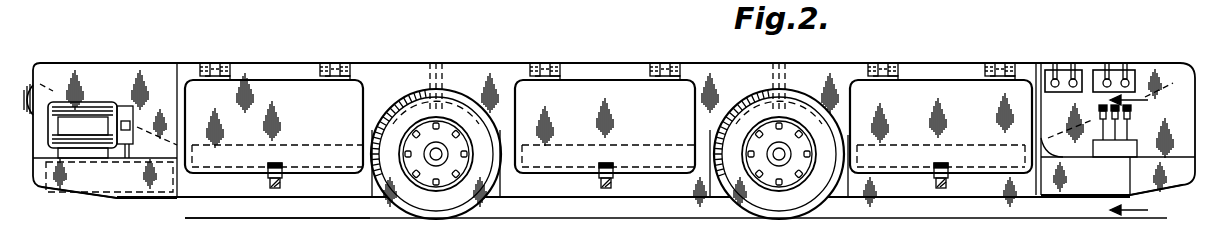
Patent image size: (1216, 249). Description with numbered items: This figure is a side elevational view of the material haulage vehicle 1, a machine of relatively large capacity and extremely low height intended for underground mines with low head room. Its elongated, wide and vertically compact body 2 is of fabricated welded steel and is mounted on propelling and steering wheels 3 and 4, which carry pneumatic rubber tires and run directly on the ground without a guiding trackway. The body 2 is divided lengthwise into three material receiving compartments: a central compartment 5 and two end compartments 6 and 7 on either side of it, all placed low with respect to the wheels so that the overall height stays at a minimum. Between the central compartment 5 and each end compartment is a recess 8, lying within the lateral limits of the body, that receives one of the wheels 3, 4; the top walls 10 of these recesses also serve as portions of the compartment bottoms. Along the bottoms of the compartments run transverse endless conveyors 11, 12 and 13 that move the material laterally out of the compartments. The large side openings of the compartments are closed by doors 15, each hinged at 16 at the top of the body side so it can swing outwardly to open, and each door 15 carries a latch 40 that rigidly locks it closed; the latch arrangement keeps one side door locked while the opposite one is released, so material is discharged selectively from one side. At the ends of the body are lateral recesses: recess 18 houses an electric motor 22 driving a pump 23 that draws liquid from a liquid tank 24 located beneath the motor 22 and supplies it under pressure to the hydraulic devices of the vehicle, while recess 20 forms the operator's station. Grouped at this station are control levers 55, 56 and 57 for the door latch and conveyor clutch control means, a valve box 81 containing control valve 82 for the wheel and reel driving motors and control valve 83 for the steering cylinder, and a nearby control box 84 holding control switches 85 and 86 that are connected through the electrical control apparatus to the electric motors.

The material haulage vehicle 1 is at (680, 198).
The body 2 is at (527, 187).
The propelling and steering wheel 3 is at (432, 200).
The propelling and steering wheel 4 is at (792, 200).
The central compartment 5 is at (708, 88).
The end compartment 6 is at (162, 85).
The end compartment 7 is at (1163, 78).
The recess 8 is at (378, 195).
The top wall of recess 10 is at (408, 117).
The endless conveyor 11 is at (548, 200).
The endless conveyor 12 is at (308, 208).
The endless conveyor 13 is at (992, 152).
The door 15 is at (247, 153).
The hinge 16 is at (343, 65).
The lateral recess 18 is at (40, 188).
The lateral recess 20 is at (1183, 184).
The electric motor 22 is at (68, 108).
The pump 23 is at (123, 110).
The liquid tank 24 is at (100, 178).
The latch 40 is at (272, 187).
The control lever 55 is at (1102, 132).
The control lever 56 is at (1115, 135).
The control lever 57 is at (1127, 132).
The valve box 81 is at (1130, 70).
The control valve 82 is at (1106, 68).
The control valve 83 is at (1127, 68).
The control box 84 is at (1062, 70).
The control switch 85 is at (1052, 68).
The control switch 86 is at (1075, 68).